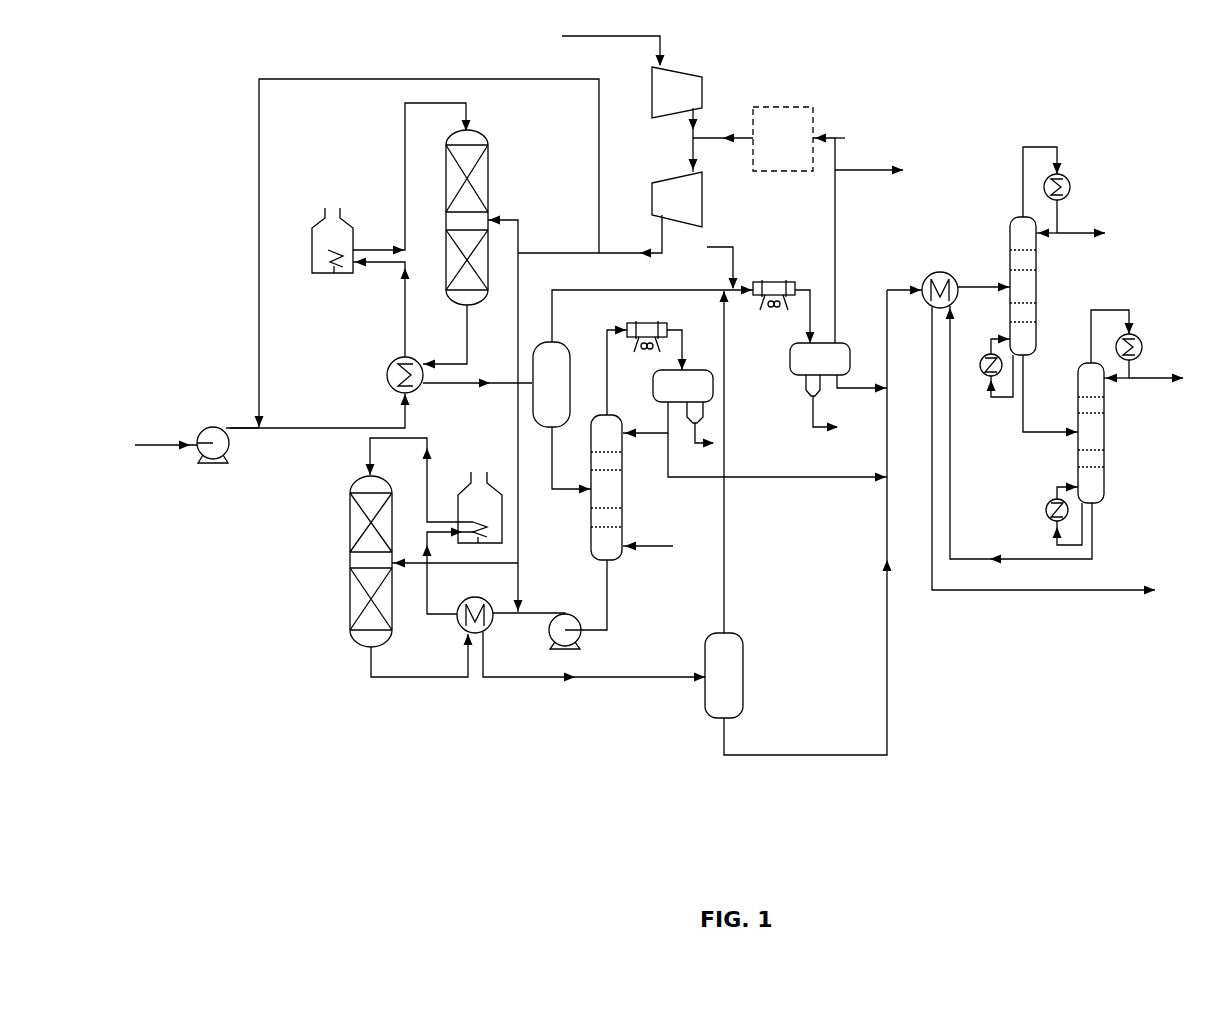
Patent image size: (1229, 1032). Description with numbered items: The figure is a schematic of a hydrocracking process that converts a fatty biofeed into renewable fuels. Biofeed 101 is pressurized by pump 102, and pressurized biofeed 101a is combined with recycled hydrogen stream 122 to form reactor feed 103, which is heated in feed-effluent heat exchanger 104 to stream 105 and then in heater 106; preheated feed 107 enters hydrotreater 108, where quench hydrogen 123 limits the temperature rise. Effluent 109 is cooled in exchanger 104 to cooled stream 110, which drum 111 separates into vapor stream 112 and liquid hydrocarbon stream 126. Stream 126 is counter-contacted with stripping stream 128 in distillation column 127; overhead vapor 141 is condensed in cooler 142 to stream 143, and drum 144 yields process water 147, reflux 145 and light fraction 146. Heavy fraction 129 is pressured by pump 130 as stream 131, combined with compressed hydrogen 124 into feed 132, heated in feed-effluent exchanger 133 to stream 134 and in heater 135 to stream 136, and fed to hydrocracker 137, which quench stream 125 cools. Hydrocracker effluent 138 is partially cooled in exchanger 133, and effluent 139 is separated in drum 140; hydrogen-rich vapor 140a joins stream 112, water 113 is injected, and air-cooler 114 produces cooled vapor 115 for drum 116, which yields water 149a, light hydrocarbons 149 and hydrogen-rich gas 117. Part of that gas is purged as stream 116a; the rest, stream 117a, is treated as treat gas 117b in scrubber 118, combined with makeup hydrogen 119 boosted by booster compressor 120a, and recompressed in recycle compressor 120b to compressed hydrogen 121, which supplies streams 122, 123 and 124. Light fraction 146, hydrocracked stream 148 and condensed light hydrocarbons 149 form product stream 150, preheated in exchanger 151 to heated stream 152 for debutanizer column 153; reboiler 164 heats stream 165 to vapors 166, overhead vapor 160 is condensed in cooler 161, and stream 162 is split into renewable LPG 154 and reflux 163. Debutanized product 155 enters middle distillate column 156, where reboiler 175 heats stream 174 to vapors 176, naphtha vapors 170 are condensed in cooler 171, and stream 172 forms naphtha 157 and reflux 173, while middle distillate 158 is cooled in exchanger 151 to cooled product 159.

The biofeed 101 is at (163, 443).
The pressurized biofeed 101a is at (243, 427).
The pump 102 is at (232, 457).
The combined reactor feed 103 is at (296, 427).
The feed-effluent heat exchanger 104 is at (388, 368).
The heated feed stream 105 is at (403, 298).
The heater 106 is at (345, 213).
The preheated feed stream 107 is at (403, 140).
The hydrotreater 108 is at (482, 128).
The hydrotreater effluent 109 is at (466, 355).
The cooled stream 110 is at (435, 388).
The drum 111 is at (571, 352).
The vapor stream 112 is at (590, 290).
The water stream 113 is at (730, 247).
The air-cooler 114 is at (778, 282).
The cooled hydrogen-rich vapor stream 115 is at (806, 325).
The drum 116 is at (792, 370).
The purge stream 116a is at (885, 170).
The hydrogen-rich gas 117 is at (838, 240).
The recycle gas line 117a is at (838, 155).
The recycle hydrogen-rich treat gas 117b is at (715, 138).
The scrubber 118 is at (787, 107).
The makeup hydrogen 119 is at (588, 36).
The booster compressor 120a is at (700, 73).
The recycle compressor 120b is at (681, 165).
The compressed gas line 121 is at (620, 252).
The recycled hydrogen stream 122 is at (258, 265).
The quench hydrogen 123 is at (519, 218).
The compressed hydrogen 124 is at (521, 605).
The hydrogen quench stream 125 is at (445, 565).
The liquid hydrocarbon stream 126 is at (570, 492).
The distillation column 127 is at (628, 500).
The stripping stream 128 is at (660, 546).
The heavy fraction stream 129 is at (612, 600).
The pump 130 is at (582, 645).
The pressurized heavy fraction stream 131 is at (540, 612).
The line 132 is at (505, 617).
The feed-effluent exchanger 133 is at (458, 628).
The heated stream 134 is at (425, 585).
The heater 135 is at (500, 483).
The reactor feed line 136 is at (368, 448).
The hydrocracker 137 is at (358, 648).
The hydrocracker effluent 138 is at (445, 680).
The exchanger effluent 139 is at (548, 680).
The drum 140 is at (745, 676).
The hydrogen-rich vapor stream 140a is at (727, 545).
The vaporized overhead product stream 141 is at (609, 365).
The cooler 142 is at (638, 322).
The condensed overhead stream 143 is at (684, 355).
The drum 144 is at (654, 382).
The reflux stream 145 is at (666, 445).
The light fraction stream 146 is at (768, 480).
The process water stream 147 is at (694, 435).
The hydrocracked stream 148 is at (760, 755).
The light hydrocarbons 149 is at (875, 385).
The water 149a is at (812, 420).
The product stream 150 is at (887, 305).
The feed-effluent exchanger 151 is at (930, 272).
The heated stream 152 is at (990, 285).
The debutanizer column 153 is at (1010, 230).
The renewable LPG stream 154 is at (1095, 235).
The debutanized product stream 155 is at (1030, 433).
The middle distillate column 156 is at (1105, 430).
The naphtha stream 157 is at (1155, 380).
The middle distillate stream 158 is at (950, 528).
The cooled middle distillate product 159 is at (1105, 590).
The vaporized renewable LPG stream 160 is at (1023, 160).
The cooler 161 is at (1070, 180).
The condensed stream 162 is at (1060, 220).
The reflux stream 163 is at (1048, 236).
The reboiler 164 is at (983, 372).
The reboiler feed stream 165 is at (1005, 400).
The vapors 166 is at (993, 345).
The naphtha vapors 170 is at (1105, 310).
The cooler 171 is at (1140, 338).
The condensed stream 172 is at (1140, 365).
The reflux stream 173 is at (1115, 380).
The reboiler feed stream 174 is at (1052, 535).
The reboiler 175 is at (1047, 505).
The vapors 176 is at (1065, 485).